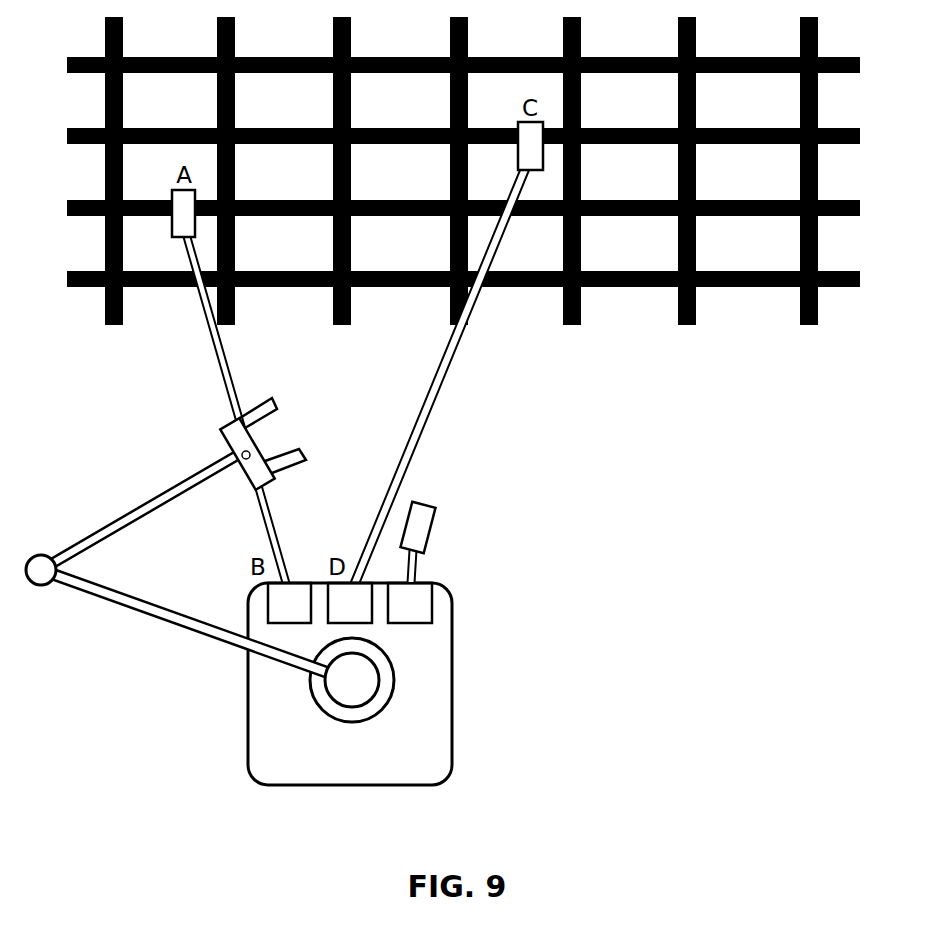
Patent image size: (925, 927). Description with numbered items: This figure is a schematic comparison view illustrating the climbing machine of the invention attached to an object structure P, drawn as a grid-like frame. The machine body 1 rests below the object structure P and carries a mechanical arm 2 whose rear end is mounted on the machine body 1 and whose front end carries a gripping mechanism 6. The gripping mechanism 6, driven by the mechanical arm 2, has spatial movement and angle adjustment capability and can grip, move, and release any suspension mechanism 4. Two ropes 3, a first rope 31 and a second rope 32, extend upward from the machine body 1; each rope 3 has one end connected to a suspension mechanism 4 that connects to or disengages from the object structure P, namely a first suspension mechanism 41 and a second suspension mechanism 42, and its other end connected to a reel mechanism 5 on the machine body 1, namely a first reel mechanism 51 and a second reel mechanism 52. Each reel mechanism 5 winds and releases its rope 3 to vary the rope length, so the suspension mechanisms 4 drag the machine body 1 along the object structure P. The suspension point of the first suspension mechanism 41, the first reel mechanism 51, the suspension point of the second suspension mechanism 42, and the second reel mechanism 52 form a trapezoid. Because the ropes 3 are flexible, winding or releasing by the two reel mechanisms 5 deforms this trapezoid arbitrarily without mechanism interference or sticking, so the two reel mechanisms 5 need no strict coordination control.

The machine body 1 is at (272, 722).
The mechanical arm 2 is at (78, 587).
The rope 3 is at (415, 565).
The suspension mechanism 4 is at (422, 517).
The reel mechanism 5 is at (425, 605).
The gripping mechanism 6 is at (220, 428).
The first rope 31 is at (218, 362).
The second rope 32 is at (445, 373).
The first suspension mechanism 41 is at (171, 228).
The second suspension mechanism 42 is at (535, 153).
The first reel mechanism 51 is at (277, 605).
The second reel mechanism 52 is at (372, 623).
The object structure P is at (687, 325).